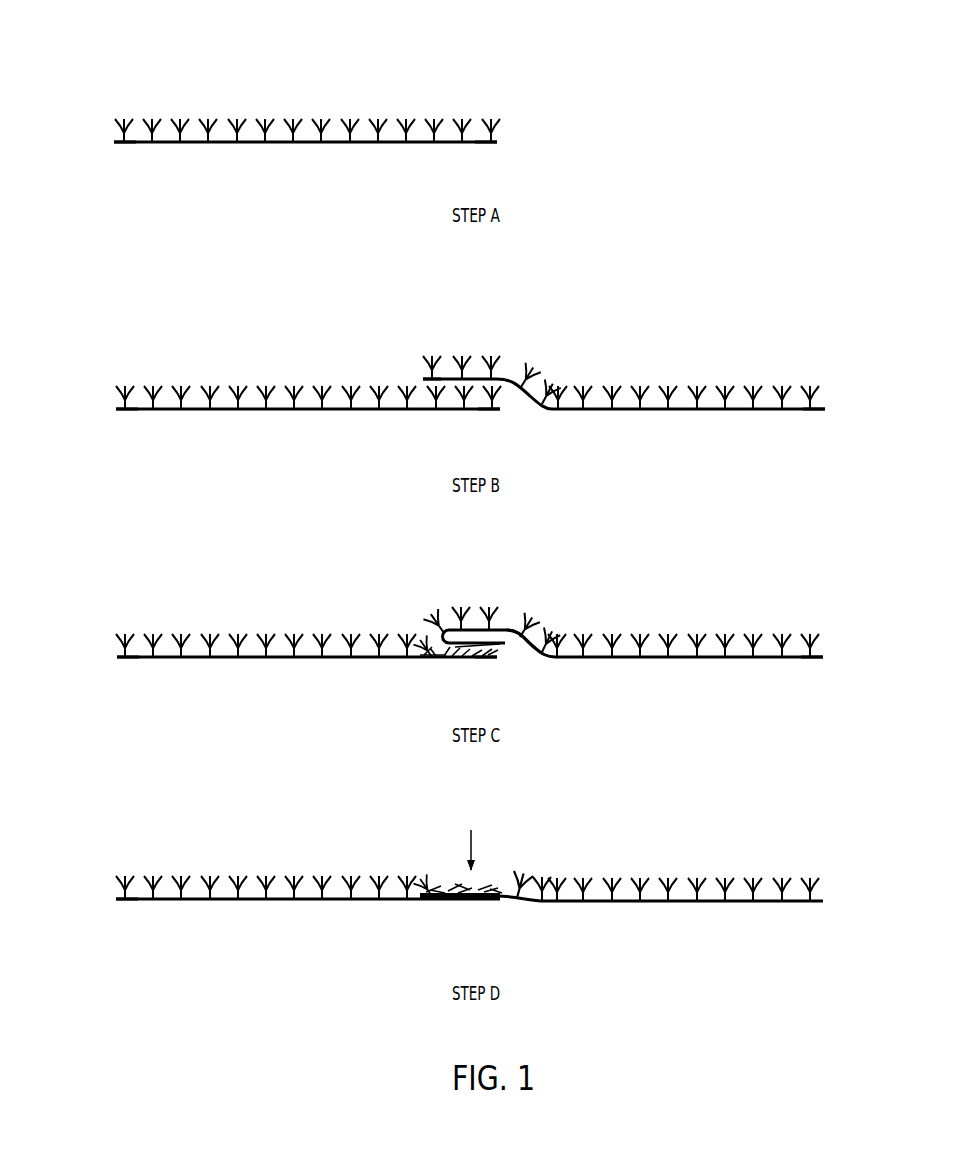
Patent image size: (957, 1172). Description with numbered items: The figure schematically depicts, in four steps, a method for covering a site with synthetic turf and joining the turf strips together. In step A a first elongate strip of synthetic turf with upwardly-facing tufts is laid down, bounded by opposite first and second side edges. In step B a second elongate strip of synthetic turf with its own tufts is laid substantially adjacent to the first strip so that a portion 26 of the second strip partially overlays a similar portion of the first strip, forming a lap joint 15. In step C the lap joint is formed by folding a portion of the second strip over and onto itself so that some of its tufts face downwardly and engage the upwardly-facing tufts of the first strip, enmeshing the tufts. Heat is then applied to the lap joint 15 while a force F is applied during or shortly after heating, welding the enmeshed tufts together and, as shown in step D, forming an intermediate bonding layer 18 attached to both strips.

The lap joint 15 is at (468, 932).
The intermediate bonding layer 18 is at (452, 914).
The portion 26 is at (618, 353).
The force F is at (471, 840).